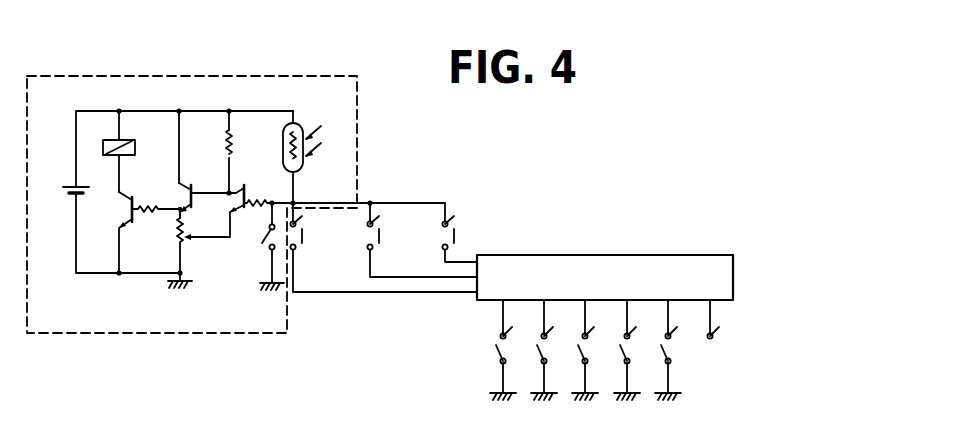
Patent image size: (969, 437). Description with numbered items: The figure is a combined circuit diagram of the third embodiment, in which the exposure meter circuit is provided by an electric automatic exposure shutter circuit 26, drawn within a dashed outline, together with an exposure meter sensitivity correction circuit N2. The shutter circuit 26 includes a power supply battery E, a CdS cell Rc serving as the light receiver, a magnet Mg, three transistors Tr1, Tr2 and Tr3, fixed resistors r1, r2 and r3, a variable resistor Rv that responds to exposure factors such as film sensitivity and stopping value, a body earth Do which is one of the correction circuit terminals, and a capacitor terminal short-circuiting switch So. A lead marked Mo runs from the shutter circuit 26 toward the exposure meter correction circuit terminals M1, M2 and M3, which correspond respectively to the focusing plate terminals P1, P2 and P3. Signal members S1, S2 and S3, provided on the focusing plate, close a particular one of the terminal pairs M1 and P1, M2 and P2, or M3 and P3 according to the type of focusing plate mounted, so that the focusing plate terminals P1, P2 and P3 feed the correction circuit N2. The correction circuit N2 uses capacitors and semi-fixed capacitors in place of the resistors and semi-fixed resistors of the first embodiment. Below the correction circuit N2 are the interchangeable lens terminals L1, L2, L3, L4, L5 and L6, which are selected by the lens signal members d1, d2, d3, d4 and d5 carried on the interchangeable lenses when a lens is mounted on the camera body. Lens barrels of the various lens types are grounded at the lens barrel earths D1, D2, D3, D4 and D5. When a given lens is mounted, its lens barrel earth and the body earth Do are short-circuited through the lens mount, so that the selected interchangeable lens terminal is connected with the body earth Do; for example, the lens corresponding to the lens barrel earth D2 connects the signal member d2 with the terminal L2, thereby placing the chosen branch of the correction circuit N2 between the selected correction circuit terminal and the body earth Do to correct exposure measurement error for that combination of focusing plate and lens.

The electric automatic exposure shutter circuit 26 is at (360, 108).
The power supply battery E is at (88, 184).
The magnet Mg is at (134, 141).
The transistor Tr1 is at (135, 217).
The transistor Tr2 is at (194, 191).
The transistor Tr3 is at (245, 188).
The fixed resistor r1 is at (156, 225).
The fixed resistor r2 is at (241, 142).
The fixed resistor r3 is at (255, 220).
The variable resistor Rv is at (203, 240).
The CdS cell Rc is at (303, 128).
The terminal Mo is at (296, 201).
The capacitor terminal short-circuiting switch So is at (261, 243).
The body earth Do is at (185, 277).
The exposure meter correction circuit terminal M1 is at (302, 216).
The signal member S1 is at (304, 237).
The focusing plate terminal P1 is at (296, 256).
The exposure meter correction circuit terminal M2 is at (379, 216).
The signal member S2 is at (381, 237).
The focusing plate terminal P2 is at (373, 256).
The exposure meter correction circuit terminal M3 is at (454, 216).
The signal member S3 is at (456, 233).
The focusing plate terminal P3 is at (450, 251).
The exposure meter sensitivity correction circuit N2 is at (582, 254).
The interchangeable lens terminal L1 is at (513, 319).
The interchangeable lens terminal L2 is at (554, 319).
The interchangeable lens terminal L3 is at (595, 319).
The interchangeable lens terminal L4 is at (637, 319).
The interchangeable lens terminal L5 is at (678, 319).
The output lead L6 is at (720, 319).
The lens signal member d1 is at (499, 353).
The lens signal member d2 is at (540, 353).
The lens signal member d3 is at (581, 353).
The lens signal member d4 is at (623, 353).
The lens signal member d5 is at (664, 353).
The lens barrel earth D1 is at (501, 391).
The lens barrel earth D2 is at (542, 391).
The lens barrel earth D3 is at (583, 391).
The lens barrel earth D4 is at (625, 391).
The lens barrel earth D5 is at (666, 391).